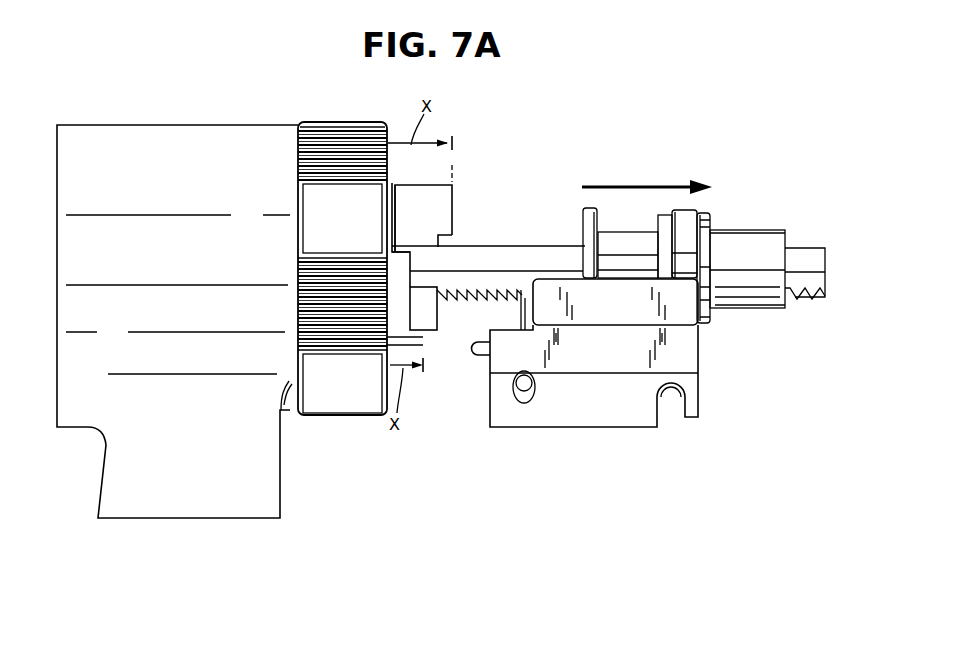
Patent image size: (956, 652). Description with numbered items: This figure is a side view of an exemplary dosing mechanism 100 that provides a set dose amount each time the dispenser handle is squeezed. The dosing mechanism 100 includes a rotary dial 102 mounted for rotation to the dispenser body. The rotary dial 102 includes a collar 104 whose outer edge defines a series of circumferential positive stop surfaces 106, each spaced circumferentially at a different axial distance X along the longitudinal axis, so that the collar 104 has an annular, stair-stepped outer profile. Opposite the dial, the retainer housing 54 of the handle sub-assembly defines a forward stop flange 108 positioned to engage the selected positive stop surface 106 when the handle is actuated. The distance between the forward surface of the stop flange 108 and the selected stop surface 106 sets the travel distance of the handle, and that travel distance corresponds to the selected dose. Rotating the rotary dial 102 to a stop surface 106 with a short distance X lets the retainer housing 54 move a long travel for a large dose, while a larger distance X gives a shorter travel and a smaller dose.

The retainer housing 54 is at (595, 428).
The dosing mechanism 100 is at (469, 113).
The rotary dial 102 is at (340, 114).
The collar 104 is at (424, 177).
The circumferential positive stop surfaces 106 is at (455, 218).
The forward stop flange 108 is at (465, 362).